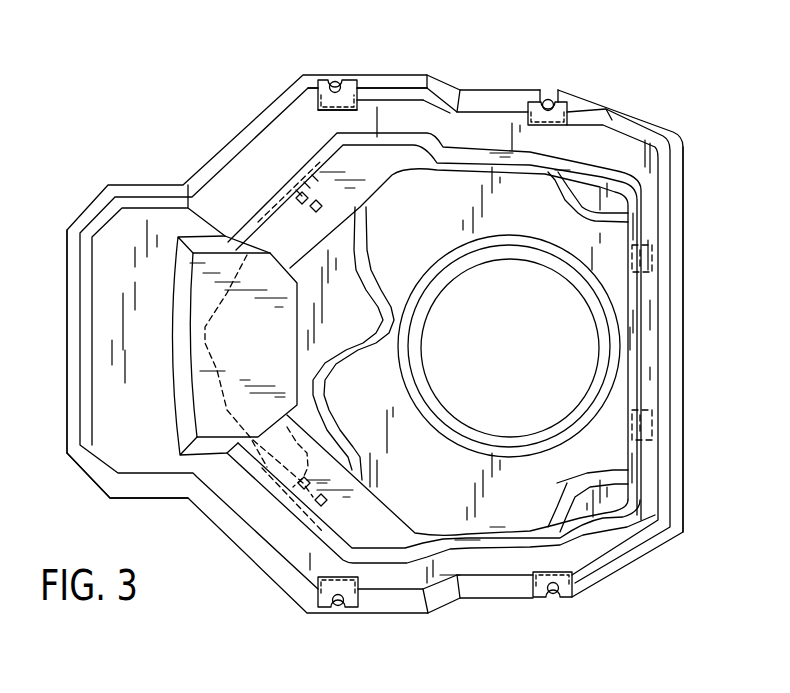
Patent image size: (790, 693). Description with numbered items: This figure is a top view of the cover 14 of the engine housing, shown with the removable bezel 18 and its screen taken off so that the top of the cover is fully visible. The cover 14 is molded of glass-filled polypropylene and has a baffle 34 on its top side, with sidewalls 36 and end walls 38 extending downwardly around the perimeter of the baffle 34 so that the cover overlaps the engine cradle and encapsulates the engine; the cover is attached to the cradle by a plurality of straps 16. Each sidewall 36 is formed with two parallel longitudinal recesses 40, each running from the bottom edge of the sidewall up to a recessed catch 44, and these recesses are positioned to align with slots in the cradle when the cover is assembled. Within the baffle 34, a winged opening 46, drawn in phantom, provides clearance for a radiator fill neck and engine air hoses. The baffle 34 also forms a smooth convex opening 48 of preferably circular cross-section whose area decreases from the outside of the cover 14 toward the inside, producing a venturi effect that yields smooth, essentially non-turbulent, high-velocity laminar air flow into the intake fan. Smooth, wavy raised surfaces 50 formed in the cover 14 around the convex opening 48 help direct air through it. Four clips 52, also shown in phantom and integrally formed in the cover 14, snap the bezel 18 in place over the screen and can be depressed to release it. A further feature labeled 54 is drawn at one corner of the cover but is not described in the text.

The cover 14 is at (637, 90).
The straps 16 is at (336, 116).
The bezel 18 is at (202, 260).
The baffle 34 is at (438, 214).
The sidewalls 36 is at (443, 78).
The end walls 38 is at (67, 358).
The longitudinal recesses 40 is at (338, 64).
The recessed catch 44 is at (357, 82).
The winged opening 46 is at (203, 343).
The convex opening 48 is at (447, 410).
The raised surfaces 50 is at (577, 220).
The clips 52 is at (305, 195).
The corner 54 is at (83, 473).